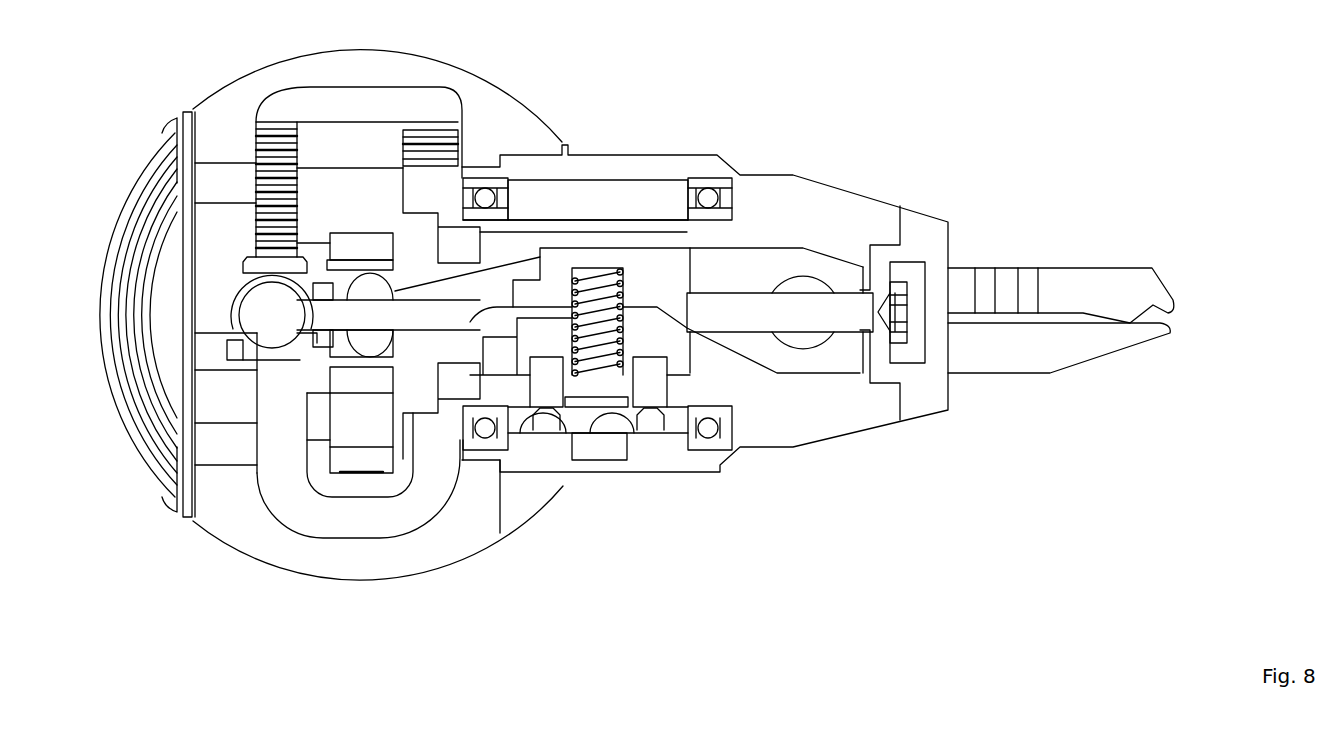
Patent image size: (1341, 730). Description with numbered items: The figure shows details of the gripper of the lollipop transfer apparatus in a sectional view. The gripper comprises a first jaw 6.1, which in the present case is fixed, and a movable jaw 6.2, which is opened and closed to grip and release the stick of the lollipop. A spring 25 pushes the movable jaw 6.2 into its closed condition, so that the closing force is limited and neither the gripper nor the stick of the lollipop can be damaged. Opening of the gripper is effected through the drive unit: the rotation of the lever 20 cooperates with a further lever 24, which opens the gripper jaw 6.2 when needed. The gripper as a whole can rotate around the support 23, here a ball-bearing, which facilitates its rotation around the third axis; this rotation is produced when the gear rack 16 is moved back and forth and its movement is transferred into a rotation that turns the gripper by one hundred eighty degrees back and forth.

The gear rack 16 is at (257, 322).
The lever 20 is at (363, 420).
The support 23 is at (488, 192).
The lever 24 is at (503, 273).
The spring 25 is at (632, 366).
The first jaw 6.1 is at (1073, 360).
The movable jaw 6.2 is at (1083, 283).